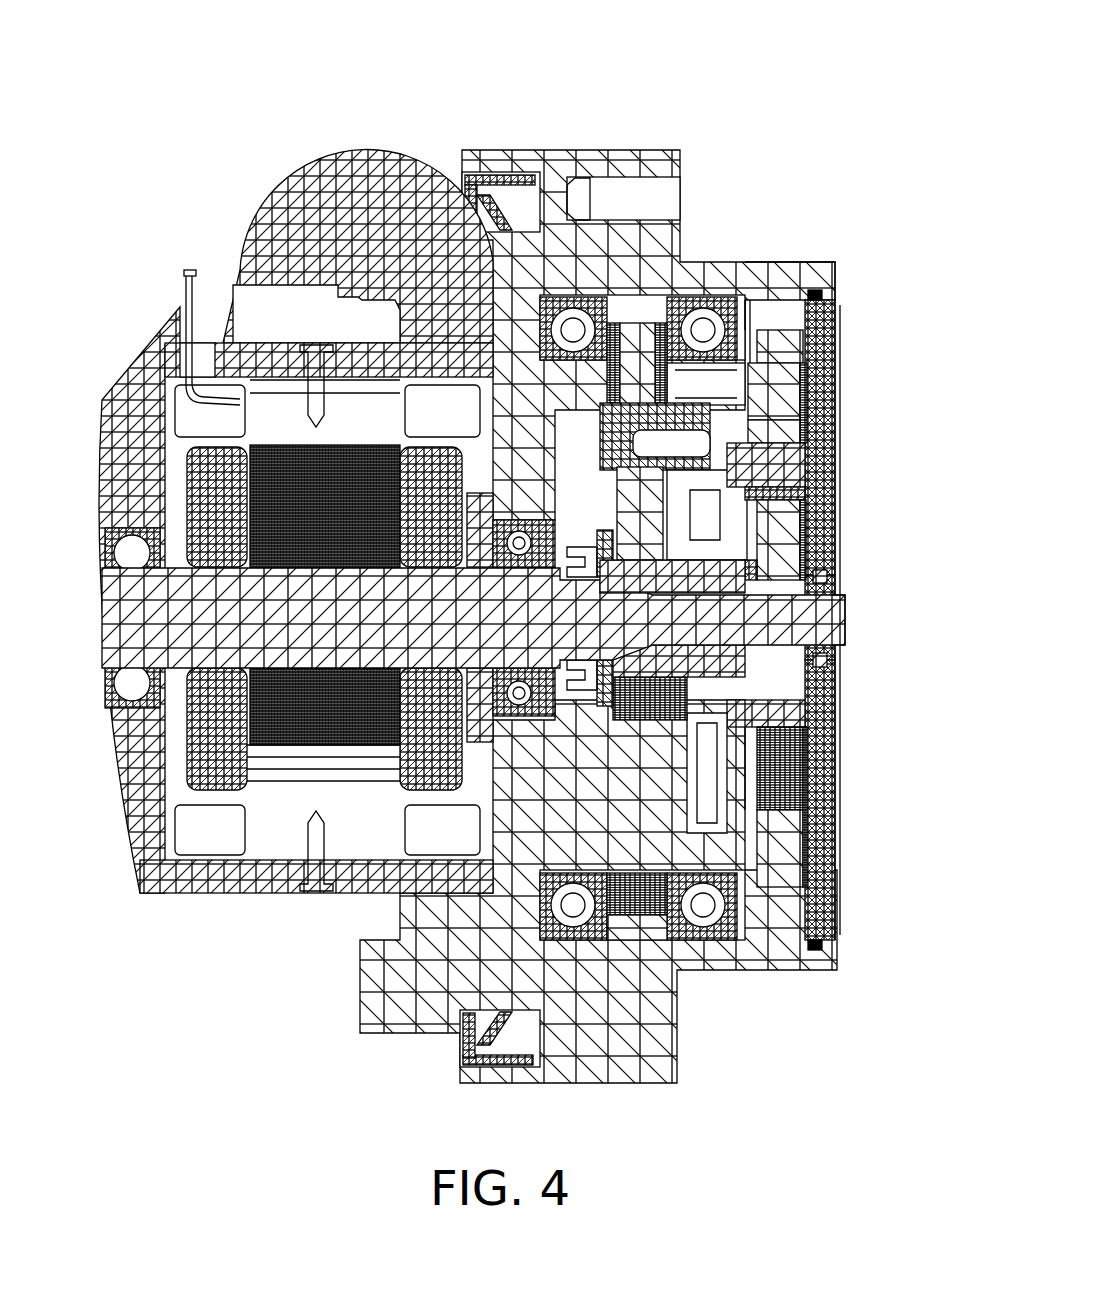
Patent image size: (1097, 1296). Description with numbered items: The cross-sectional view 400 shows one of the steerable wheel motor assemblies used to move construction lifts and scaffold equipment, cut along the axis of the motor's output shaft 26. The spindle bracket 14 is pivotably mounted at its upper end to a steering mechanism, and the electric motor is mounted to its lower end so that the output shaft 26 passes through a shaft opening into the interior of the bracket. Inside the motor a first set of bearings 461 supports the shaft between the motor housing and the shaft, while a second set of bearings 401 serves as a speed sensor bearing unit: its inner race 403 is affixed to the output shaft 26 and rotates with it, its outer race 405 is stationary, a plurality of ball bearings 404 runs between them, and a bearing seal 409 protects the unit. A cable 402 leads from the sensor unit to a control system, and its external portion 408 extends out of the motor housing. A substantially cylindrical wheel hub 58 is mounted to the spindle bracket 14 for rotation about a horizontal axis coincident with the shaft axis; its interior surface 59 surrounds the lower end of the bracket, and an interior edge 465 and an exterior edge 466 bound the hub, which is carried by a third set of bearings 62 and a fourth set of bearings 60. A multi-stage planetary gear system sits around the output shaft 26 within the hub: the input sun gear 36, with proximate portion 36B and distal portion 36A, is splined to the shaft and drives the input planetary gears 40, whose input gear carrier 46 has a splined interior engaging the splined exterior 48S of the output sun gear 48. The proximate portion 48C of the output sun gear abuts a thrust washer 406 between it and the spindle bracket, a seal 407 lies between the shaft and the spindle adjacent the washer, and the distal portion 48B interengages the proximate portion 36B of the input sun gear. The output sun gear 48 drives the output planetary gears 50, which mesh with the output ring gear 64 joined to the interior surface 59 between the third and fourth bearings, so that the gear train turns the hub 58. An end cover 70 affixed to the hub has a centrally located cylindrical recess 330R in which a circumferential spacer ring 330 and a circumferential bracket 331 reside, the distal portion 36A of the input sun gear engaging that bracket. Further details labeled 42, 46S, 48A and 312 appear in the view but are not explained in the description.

The cross-sectional view 400 is at (750, 57).
The spindle bracket 14 is at (240, 268).
The output shaft 26 is at (142, 834).
The input sun gear 36 is at (830, 705).
The distal portion of input sun gear 36A is at (830, 680).
The proximate portion of input sun gear 36B is at (822, 575).
The input planetary gears 40 is at (787, 387).
The ring gear retainer 42 is at (778, 352).
The input gear carrier 46 is at (787, 775).
The planet gear shaft 46S is at (797, 757).
The output sun gear 48 is at (797, 532).
The planet carrier first portion 48A is at (780, 507).
The distal portion of output sun gear 48B is at (797, 562).
The proximate portion of output sun gear 48C is at (780, 480).
The splined exterior of output sun gear 48S is at (787, 800).
The output planetary gears 50 is at (600, 530).
The wheel hub 58 is at (624, 153).
The interior surface of wheel hub 59 is at (816, 950).
The fourth set of bearings 60 is at (706, 928).
The third set of bearings 62 is at (570, 928).
The output ring gear 64 is at (637, 912).
The end cover 70 is at (840, 830).
The output shaft end 312 is at (832, 640).
The circumferential spacer ring 330 is at (825, 582).
The cylindrical recess 330R is at (835, 657).
The circumferential bracket 331 is at (835, 613).
The second set of bearings 401 is at (470, 520).
The cable 402 is at (462, 485).
The inner race 403 is at (778, 425).
The ball bearings 404 is at (505, 495).
The outer race 405 is at (520, 522).
The thrust washer 406 is at (778, 848).
The seal 407 is at (700, 918).
The external portion of cable 408 is at (184, 292).
The bearing/speed sensor seal 409 is at (640, 470).
The first set of bearings 461 is at (120, 706).
The interior edge of hub 465 is at (462, 176).
The exterior edge of hub 466 is at (838, 275).